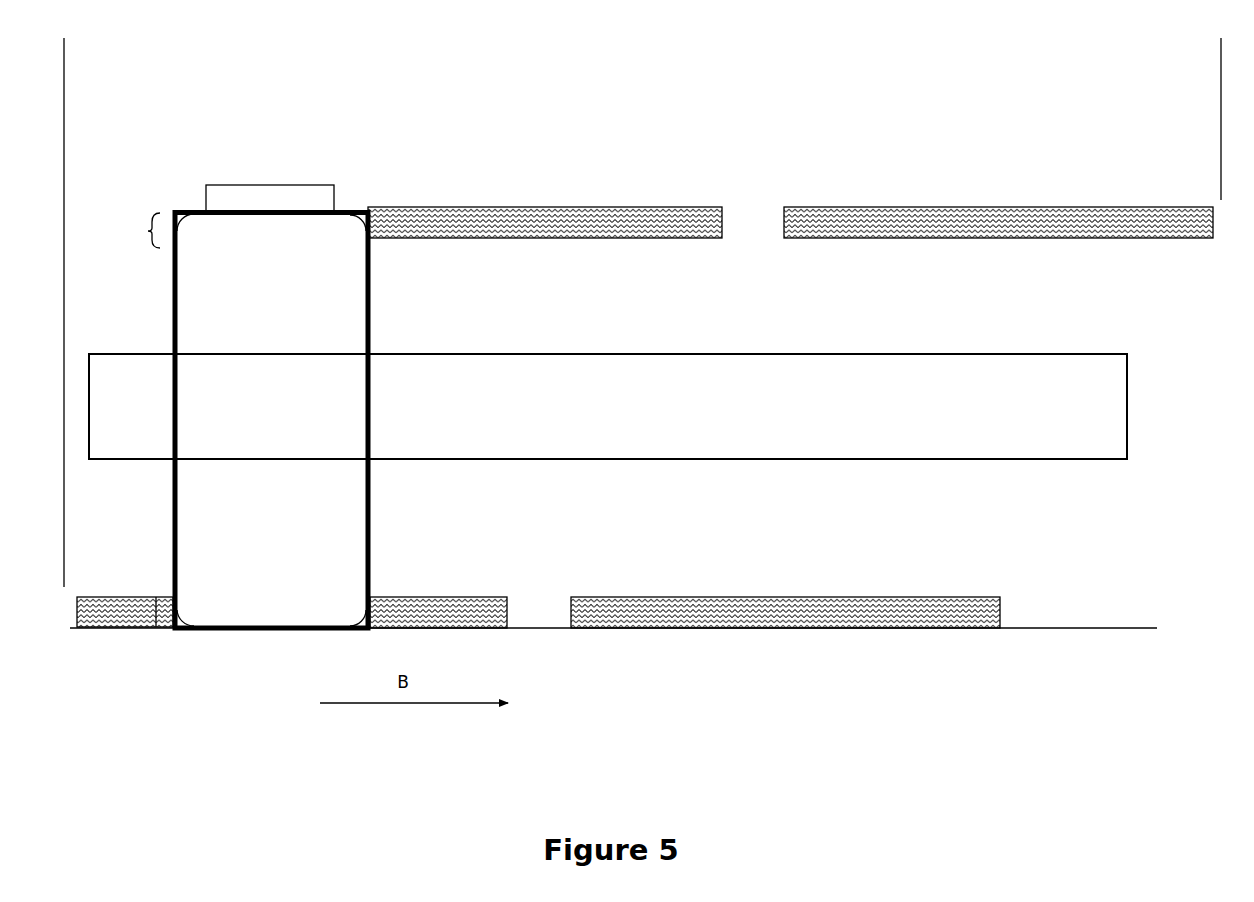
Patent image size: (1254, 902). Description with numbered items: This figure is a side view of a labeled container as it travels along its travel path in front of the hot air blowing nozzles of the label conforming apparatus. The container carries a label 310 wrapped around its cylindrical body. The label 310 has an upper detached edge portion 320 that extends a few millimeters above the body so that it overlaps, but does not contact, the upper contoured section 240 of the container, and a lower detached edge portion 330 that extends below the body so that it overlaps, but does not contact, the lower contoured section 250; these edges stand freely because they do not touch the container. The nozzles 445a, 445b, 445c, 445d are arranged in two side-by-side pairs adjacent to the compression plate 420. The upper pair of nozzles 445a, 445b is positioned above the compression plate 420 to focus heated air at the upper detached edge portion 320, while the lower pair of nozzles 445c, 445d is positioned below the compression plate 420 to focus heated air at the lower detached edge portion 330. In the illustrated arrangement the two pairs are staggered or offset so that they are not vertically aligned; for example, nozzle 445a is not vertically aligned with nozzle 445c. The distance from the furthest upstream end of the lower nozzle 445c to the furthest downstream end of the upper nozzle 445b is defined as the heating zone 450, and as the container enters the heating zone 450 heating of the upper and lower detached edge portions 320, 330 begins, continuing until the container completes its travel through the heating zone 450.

The heating zone 450 is at (1221, 52).
The compression plate 420 is at (608, 406).
The label 310 is at (172, 315).
The upper detached edge portion 320 is at (135, 230).
The upper contoured section 240 is at (178, 230).
The lower contoured section 250 is at (187, 617).
The lower detached edge portion 330 is at (152, 610).
The hot air blowing nozzle 445a is at (547, 215).
The hot air blowing nozzle 445b is at (992, 217).
The hot air blowing nozzle 445c is at (433, 607).
The hot air blowing nozzle 445d is at (755, 607).